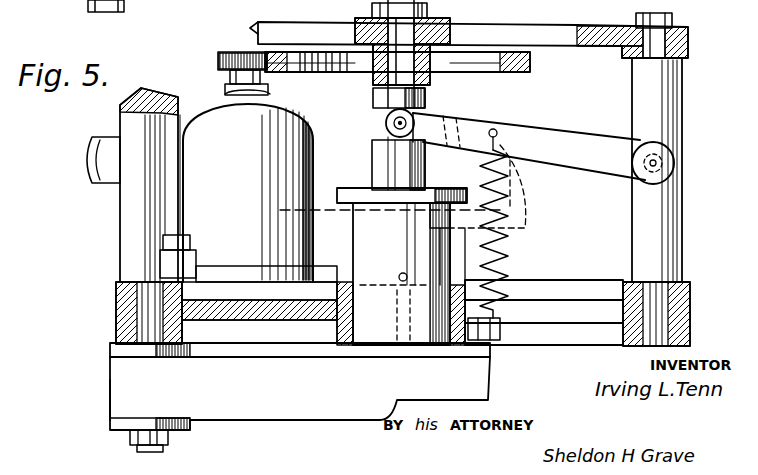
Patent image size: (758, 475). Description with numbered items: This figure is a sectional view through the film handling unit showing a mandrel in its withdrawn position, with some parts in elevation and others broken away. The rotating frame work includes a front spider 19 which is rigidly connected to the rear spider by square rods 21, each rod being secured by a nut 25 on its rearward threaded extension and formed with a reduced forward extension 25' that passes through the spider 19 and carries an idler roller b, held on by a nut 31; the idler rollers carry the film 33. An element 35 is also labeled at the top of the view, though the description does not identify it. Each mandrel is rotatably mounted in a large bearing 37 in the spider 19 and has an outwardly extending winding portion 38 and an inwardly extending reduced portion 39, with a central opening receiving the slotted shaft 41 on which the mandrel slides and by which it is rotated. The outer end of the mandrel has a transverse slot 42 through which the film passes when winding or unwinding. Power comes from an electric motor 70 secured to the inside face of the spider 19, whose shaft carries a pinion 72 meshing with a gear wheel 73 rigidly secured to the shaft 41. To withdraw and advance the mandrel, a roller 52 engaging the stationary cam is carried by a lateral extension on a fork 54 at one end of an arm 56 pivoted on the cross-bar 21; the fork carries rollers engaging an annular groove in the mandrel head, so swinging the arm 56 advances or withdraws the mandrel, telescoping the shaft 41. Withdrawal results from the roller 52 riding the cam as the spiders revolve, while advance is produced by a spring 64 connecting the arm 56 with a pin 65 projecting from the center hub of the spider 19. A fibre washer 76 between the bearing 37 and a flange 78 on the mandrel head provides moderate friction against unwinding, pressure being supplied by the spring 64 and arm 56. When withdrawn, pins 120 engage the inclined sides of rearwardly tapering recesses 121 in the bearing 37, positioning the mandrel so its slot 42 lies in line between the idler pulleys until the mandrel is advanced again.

The slotted shaft 41 is at (393, 32).
The gear wheel 73 is at (332, 72).
The pinion 72 is at (222, 52).
The electric motor 70 is at (310, 128).
The roller 52 is at (386, 120).
The fork 54 is at (440, 118).
The arm 56 is at (550, 145).
The square rod 21 is at (670, 232).
The fibre washer 76 is at (335, 196).
The inwardly extending reduced portion 39 is at (381, 226).
The flange 78 is at (445, 192).
The winding portion 38 is at (375, 345).
The transverse slot 42 is at (447, 345).
The pin 120 is at (400, 275).
The rearwardly tapering recess 121 is at (395, 315).
The nut 25 is at (400, 217).
The film 33 is at (310, 410).
The idler roller b is at (105, 410).
The nut 31 is at (128, 438).
The reduced forward extension 25' is at (182, 454).
The bolt 35 is at (258, 22).
The front spider 19 is at (570, 292).
The bearing 37 is at (457, 285).
The pin 65 is at (500, 338).
The spring 64 is at (505, 256).